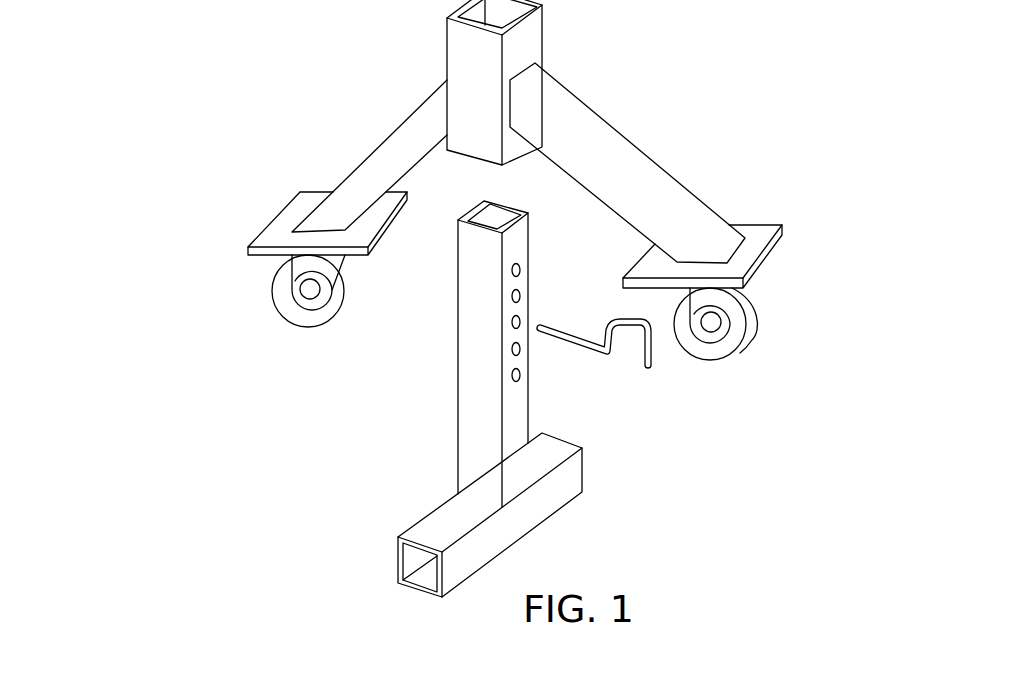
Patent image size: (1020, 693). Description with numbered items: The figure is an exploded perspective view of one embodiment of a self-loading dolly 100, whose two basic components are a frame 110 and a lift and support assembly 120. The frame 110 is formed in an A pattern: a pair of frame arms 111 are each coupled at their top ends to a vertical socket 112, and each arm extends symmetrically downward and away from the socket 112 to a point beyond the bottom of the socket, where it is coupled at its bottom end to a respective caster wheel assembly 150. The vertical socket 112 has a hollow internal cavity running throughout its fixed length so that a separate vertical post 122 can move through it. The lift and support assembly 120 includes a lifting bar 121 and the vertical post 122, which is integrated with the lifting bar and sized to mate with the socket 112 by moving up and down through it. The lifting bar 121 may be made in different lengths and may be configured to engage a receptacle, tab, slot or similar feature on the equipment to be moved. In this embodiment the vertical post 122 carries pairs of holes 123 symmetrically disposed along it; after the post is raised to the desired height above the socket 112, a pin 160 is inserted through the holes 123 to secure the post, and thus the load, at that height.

The self-loading dolly 100 is at (170, 325).
The frame 110 is at (308, 97).
The frame arms 111 is at (373, 145).
The vertical socket 112 is at (490, 75).
The lift and support assembly 120 is at (348, 467).
The lifting bar 121 is at (582, 478).
The vertical post 122 is at (536, 354).
The holes 123 is at (521, 296).
The caster wheel assembly 150 is at (275, 218).
The pin 160 is at (650, 357).